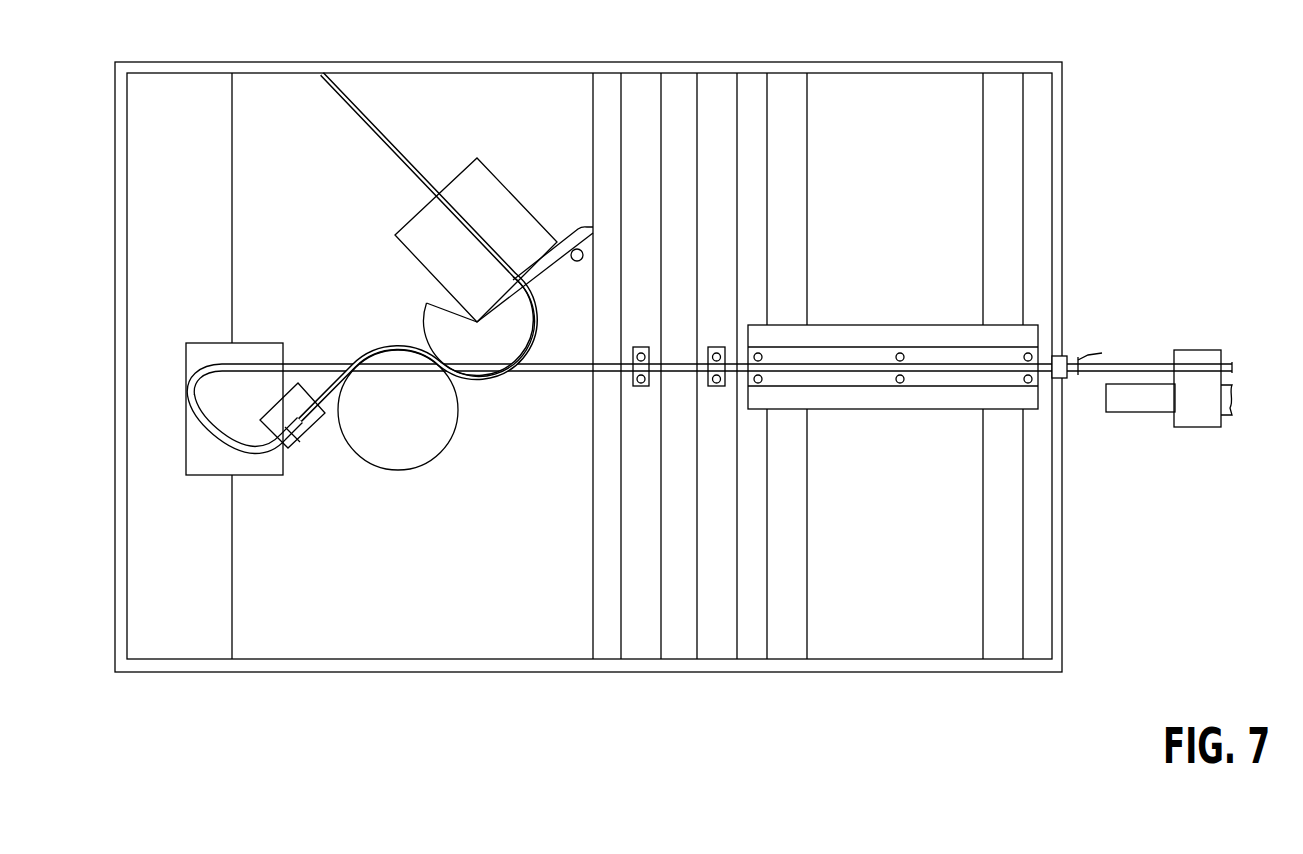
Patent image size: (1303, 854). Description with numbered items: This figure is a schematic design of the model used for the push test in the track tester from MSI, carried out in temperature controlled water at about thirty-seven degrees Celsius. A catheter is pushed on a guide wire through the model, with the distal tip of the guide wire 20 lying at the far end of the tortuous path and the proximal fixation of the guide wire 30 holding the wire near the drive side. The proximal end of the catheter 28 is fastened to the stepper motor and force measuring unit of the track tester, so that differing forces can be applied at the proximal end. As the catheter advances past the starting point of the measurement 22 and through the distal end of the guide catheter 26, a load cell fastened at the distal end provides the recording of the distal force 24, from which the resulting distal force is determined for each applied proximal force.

The distal tip of the guide wire 20 is at (393, 148).
The starting point of the measurement 22 is at (514, 276).
The recording of the distal force 24 is at (513, 284).
The distal end of guide catheter 26 is at (300, 430).
The proximal end of the catheter 28 is at (1133, 366).
The proximal fixation of the guide wire 30 is at (1082, 377).